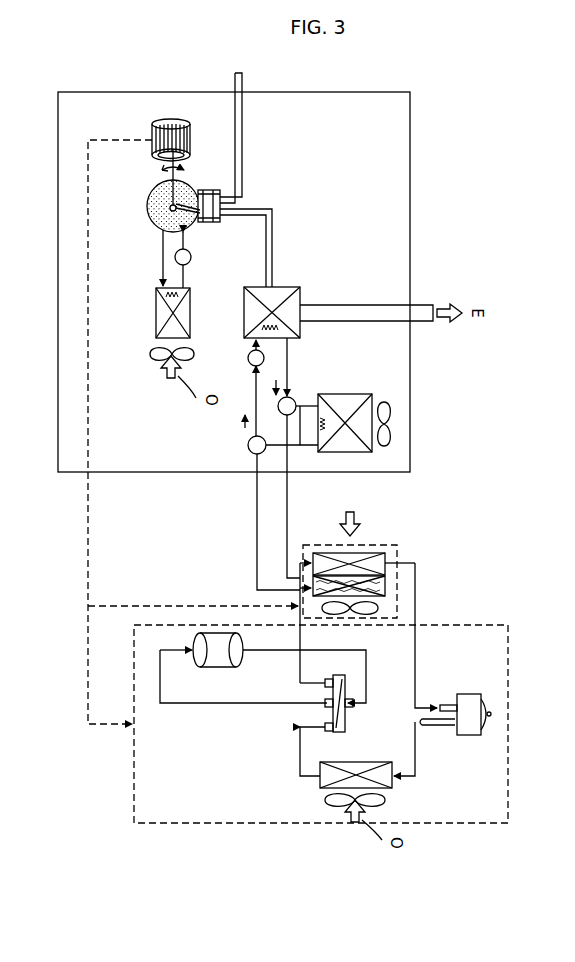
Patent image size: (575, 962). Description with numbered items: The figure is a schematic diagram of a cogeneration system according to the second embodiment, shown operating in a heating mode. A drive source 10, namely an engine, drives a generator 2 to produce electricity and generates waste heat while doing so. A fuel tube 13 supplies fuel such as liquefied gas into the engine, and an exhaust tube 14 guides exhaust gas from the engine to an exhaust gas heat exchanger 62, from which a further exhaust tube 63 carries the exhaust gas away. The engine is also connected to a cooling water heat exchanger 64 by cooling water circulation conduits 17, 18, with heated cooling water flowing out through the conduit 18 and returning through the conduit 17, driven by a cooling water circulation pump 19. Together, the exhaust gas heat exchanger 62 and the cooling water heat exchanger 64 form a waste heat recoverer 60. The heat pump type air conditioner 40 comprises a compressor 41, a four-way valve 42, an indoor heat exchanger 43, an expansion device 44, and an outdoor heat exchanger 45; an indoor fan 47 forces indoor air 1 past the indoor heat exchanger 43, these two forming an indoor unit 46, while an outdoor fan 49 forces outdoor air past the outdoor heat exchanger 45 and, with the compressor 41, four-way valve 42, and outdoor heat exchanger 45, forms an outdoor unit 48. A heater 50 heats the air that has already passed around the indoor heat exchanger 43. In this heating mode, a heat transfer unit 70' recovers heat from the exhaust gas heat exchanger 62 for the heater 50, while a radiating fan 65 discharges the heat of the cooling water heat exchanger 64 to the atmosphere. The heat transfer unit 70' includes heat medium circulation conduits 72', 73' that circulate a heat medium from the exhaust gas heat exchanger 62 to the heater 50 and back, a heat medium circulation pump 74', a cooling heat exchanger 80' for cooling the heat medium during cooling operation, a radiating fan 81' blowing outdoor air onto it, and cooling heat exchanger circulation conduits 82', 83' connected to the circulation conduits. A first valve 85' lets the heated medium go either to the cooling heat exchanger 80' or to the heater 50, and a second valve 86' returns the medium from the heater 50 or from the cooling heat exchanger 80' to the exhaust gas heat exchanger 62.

The inlet air 1 is at (362, 518).
The generator 2 is at (192, 138).
The drive source 10 is at (150, 201).
The fuel tube 13 is at (243, 132).
The exhaust tube 14 is at (273, 251).
The cooling water circulation conduit 17 is at (162, 281).
The cooling water circulation conduit 18 is at (160, 250).
The cooling water circulation pump 19 is at (192, 260).
The heat pump type air conditioner 40 is at (490, 606).
The compressor 41 is at (226, 664).
The 4-way valve 42 is at (346, 722).
The indoor heat exchanger 43 is at (386, 556).
The expansion device 44 is at (490, 720).
The outdoor heat exchanger 45 is at (390, 780).
The indoor unit 46 is at (405, 549).
The indoor fan 47 is at (382, 605).
The outdoor unit 48 is at (128, 786).
The outdoor fan 49 is at (328, 799).
The heater 50 is at (387, 586).
The waste heat recoverer 60 is at (356, 257).
The exhaust gas heat exchanger 62 is at (302, 326).
The exhaust tube 63 is at (378, 302).
The cooling water heat exchanger 64 is at (156, 321).
The radiating fan 65 is at (152, 356).
The heat transfer unit 70' is at (420, 486).
The heat medium circulation conduit 72' is at (259, 522).
The heat medium circulation conduit 73' is at (258, 614).
The heat medium circulation pump 74' is at (240, 388).
The cooling heat exchanger 80' is at (378, 411).
The radiating fan 81' is at (419, 428).
The cooling heat exchanger circulation conduit 82' is at (331, 391).
The cooling heat exchanger circulation conduit 83' is at (307, 501).
The first valve 85' is at (298, 376).
The second valve 86' is at (256, 449).